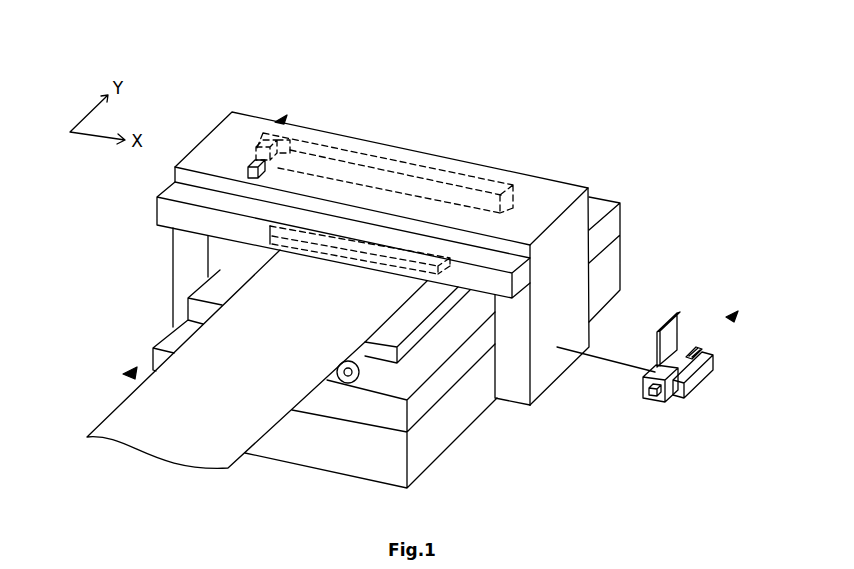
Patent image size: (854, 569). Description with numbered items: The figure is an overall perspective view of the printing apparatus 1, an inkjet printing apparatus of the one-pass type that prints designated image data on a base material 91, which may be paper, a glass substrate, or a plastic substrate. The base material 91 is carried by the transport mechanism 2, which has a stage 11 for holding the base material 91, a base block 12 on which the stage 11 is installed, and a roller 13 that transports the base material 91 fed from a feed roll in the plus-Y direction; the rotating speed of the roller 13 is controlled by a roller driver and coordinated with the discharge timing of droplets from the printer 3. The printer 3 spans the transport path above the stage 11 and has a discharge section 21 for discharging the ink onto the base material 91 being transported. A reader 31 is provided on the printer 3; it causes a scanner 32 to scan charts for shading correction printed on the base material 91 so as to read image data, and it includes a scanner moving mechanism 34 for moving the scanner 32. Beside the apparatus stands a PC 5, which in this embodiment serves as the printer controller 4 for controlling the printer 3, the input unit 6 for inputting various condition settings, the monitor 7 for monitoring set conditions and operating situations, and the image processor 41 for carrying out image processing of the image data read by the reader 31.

The printing apparatus 1 is at (463, 103).
The transport mechanism 2 is at (124, 375).
The printer 3 is at (167, 190).
The reader 31 is at (284, 121).
The scanner 32 is at (250, 168).
The scanner moving mechanism 34 is at (343, 143).
The discharge section 21 is at (386, 270).
The stage 11 is at (192, 312).
The base block 12 is at (465, 418).
The roller 13 is at (359, 372).
The base material 91 is at (303, 304).
The PC (personal computer) 5 is at (655, 351).
The monitor 7 is at (679, 322).
The input unit 6 is at (713, 371).
The printer controller 4 is at (708, 354).
The image processor 41 is at (652, 398).